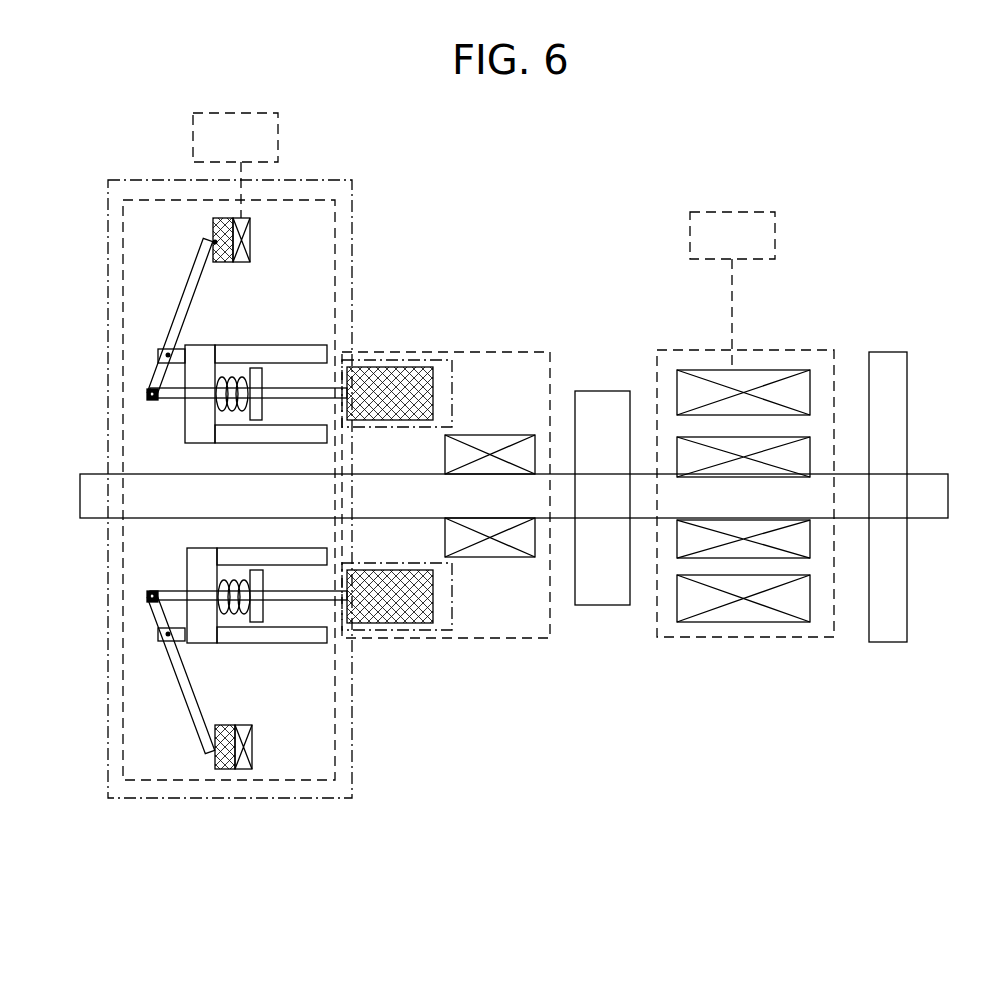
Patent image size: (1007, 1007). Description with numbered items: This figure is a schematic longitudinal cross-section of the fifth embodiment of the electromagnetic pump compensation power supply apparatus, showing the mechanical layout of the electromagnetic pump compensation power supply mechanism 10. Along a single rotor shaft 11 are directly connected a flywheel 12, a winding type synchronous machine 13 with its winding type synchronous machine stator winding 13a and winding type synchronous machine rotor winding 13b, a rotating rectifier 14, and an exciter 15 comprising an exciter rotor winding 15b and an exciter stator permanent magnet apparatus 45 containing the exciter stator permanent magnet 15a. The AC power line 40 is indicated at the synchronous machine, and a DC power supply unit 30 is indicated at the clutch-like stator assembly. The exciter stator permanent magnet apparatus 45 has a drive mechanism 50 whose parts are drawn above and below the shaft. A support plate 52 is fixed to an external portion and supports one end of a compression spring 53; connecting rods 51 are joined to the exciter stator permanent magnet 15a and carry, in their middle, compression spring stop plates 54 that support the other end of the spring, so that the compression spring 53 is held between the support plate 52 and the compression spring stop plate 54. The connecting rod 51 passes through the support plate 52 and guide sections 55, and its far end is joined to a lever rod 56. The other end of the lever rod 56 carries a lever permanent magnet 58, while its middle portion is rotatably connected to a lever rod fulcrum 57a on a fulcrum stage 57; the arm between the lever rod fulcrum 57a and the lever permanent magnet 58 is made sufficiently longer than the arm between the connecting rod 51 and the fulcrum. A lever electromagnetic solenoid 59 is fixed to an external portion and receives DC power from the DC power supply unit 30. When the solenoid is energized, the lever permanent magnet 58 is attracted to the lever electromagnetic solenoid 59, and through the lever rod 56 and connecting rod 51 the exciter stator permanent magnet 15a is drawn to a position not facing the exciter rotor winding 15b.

The electromagnetic pump compensation power supply mechanism 10 is at (542, 190).
The rotor shaft 11 is at (926, 519).
The flywheel 12 is at (888, 352).
The winding type synchronous machine 13 is at (768, 500).
The winding type synchronous machine stator winding 13a is at (771, 624).
The winding type synchronous machine rotor winding 13b is at (812, 545).
The rotating rectifier 14 is at (612, 391).
The exciter 15 is at (461, 480).
The exciter stator permanent magnet 15a is at (435, 585).
The exciter rotor winding 15b is at (517, 558).
The DC power supply unit 30 is at (280, 146).
The AC power line 40 is at (777, 228).
The exciter stator permanent magnet apparatus 45 is at (106, 255).
The drive mechanism 50 is at (338, 225).
The connecting rod 51 is at (322, 385).
The support plate 52 is at (202, 645).
The compression spring 53 is at (232, 377).
The compression spring stop plate 54 is at (256, 372).
The guide section 55 is at (243, 645).
The lever rod 56 is at (183, 695).
The fulcrum stage 57 is at (162, 640).
The lever rod fulcrum 57a is at (158, 632).
The lever permanent magnet 58 is at (210, 760).
The lever electromagnetic solenoid 59 is at (252, 743).